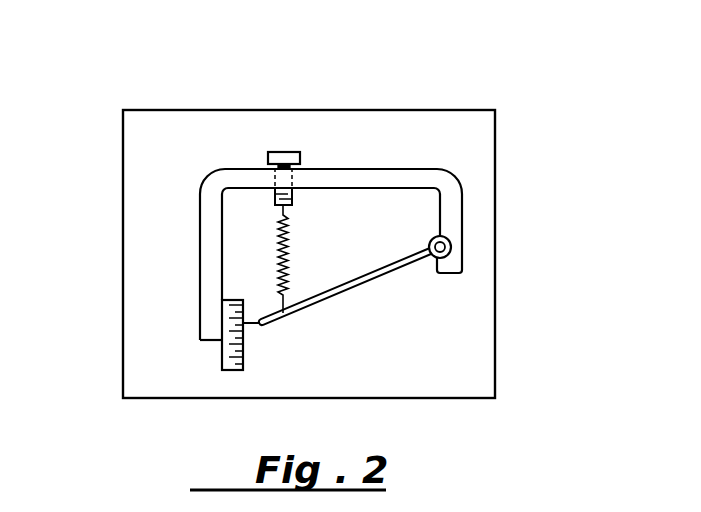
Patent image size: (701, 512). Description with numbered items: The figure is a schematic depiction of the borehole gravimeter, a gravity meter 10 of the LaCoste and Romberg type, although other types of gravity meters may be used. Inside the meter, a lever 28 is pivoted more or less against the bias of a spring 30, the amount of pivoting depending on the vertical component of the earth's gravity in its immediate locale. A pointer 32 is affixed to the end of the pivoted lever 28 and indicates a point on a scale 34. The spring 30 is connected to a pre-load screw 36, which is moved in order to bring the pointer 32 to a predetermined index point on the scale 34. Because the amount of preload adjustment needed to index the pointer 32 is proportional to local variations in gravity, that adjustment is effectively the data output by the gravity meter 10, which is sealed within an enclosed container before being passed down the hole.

The gravity meter 10 is at (497, 222).
The lever 28 is at (372, 276).
The spring 30 is at (287, 268).
The pointer 32 is at (253, 329).
The scale 34 is at (237, 300).
The pre-load screw 36 is at (283, 157).